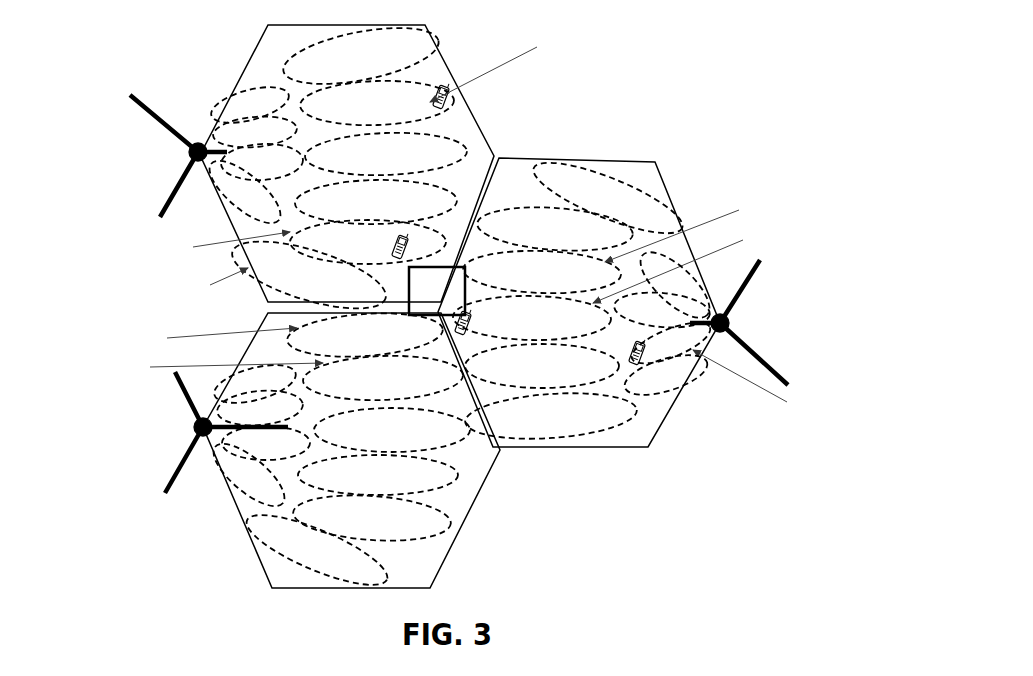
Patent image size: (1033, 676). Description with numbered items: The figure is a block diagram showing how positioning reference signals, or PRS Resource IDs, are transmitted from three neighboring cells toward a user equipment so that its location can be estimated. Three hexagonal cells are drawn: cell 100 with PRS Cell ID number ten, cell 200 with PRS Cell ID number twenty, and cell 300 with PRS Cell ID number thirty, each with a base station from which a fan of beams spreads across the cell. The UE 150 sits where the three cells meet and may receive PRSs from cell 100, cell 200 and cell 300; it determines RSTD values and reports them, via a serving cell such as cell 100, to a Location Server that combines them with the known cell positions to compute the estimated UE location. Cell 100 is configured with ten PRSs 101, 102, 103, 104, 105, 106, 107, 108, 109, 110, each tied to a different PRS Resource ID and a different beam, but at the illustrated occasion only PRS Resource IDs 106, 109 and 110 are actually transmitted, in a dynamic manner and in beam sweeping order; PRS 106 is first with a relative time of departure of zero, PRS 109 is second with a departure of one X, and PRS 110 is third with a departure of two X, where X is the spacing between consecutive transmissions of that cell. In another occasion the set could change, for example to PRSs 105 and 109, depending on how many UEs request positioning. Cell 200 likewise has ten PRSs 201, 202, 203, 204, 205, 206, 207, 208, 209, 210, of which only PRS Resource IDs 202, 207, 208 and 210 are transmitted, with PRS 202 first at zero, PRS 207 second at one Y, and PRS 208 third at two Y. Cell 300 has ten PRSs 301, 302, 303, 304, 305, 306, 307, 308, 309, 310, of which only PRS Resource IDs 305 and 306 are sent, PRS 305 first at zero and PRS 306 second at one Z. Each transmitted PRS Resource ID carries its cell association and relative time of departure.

The cell 300 is at (89, 37).
The cell 100 is at (263, 163).
The cell 200 is at (656, 302).
The UE 150 is at (427, 309).
The PRS 101 is at (249, 105).
The PRS 102 is at (255, 131).
The PRS 103 is at (262, 162).
The PRS 104 is at (244, 192).
The PRS 105 is at (361, 55).
The PRS Resource ID 106 is at (492, 86).
The PRS 107 is at (385, 154).
The PRS 108 is at (376, 202).
The PRS Resource ID 109 is at (247, 242).
The PRS Resource ID 110 is at (247, 275).
The PRS 201 is at (666, 375).
The PRS Resource ID 202 is at (775, 373).
The PRS 203 is at (662, 310).
The PRS 204 is at (675, 285).
The PRS 205 is at (551, 416).
The PRS 206 is at (542, 366).
The PRS Resource ID 207 is at (675, 285).
The PRS Resource ID 208 is at (677, 249).
The PRS 209 is at (555, 229).
The PRS Resource ID 210 is at (607, 197).
The PRS 301 is at (254, 384).
The PRS 302 is at (260, 407).
The PRS 303 is at (266, 443).
The PRS 304 is at (248, 475).
The PRS Resource ID 305 is at (226, 335).
The PRS Resource ID 306 is at (234, 378).
The PRS 307 is at (392, 430).
The PRS 308 is at (378, 475).
The PRS 309 is at (372, 518).
The PRS 310 is at (317, 550).